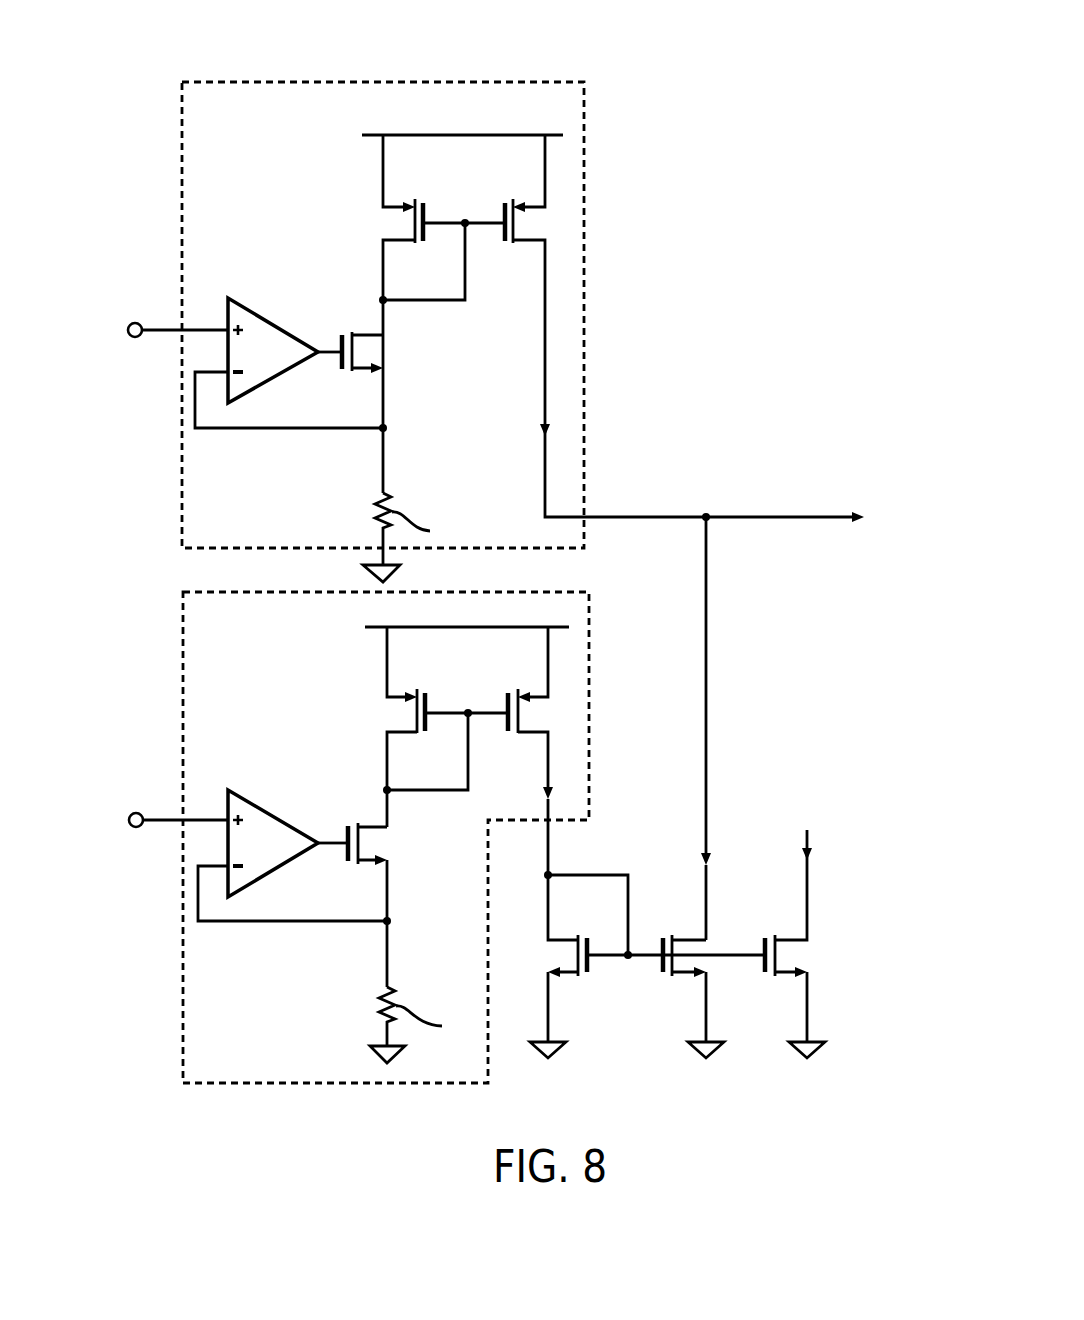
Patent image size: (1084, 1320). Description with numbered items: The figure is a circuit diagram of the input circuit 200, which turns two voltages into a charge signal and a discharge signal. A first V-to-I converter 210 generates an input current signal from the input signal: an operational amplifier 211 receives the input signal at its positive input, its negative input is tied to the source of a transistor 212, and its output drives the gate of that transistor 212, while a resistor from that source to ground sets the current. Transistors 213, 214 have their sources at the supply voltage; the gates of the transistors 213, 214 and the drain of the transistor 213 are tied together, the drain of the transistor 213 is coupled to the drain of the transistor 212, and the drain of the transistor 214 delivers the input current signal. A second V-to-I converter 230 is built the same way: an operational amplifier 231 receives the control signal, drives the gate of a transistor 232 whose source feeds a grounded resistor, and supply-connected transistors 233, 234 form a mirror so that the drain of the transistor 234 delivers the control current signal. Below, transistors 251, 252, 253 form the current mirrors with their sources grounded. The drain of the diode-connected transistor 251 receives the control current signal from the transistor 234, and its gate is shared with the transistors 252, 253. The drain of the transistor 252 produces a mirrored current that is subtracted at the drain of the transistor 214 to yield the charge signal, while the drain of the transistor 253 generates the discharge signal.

The input circuit 200 is at (493, 582).
The first V-to-I converter 210 is at (586, 117).
The operational amplifier 211 is at (278, 323).
The transistor 212 is at (372, 355).
The transistor 213 is at (390, 213).
The transistor 214 is at (529, 241).
The second V-to-I converter 230 is at (590, 662).
The operational amplifier 231 is at (280, 817).
The transistor 232 is at (372, 845).
The transistor 233 is at (396, 704).
The transistor 234 is at (528, 733).
The transistor 251 is at (556, 969).
The transistor 252 is at (692, 974).
The transistor 253 is at (793, 974).